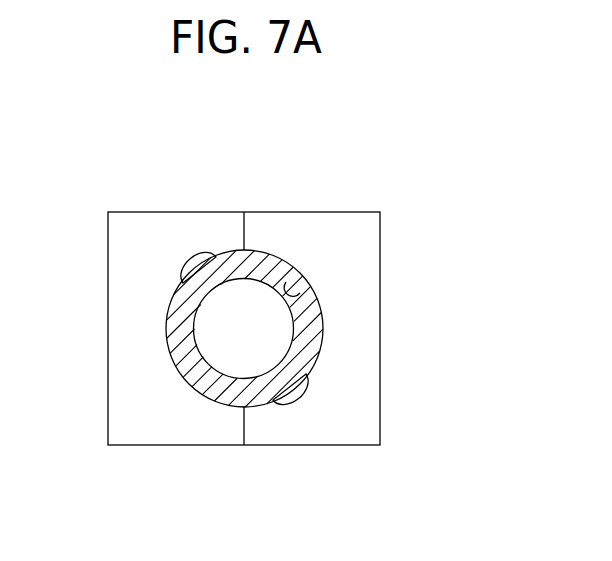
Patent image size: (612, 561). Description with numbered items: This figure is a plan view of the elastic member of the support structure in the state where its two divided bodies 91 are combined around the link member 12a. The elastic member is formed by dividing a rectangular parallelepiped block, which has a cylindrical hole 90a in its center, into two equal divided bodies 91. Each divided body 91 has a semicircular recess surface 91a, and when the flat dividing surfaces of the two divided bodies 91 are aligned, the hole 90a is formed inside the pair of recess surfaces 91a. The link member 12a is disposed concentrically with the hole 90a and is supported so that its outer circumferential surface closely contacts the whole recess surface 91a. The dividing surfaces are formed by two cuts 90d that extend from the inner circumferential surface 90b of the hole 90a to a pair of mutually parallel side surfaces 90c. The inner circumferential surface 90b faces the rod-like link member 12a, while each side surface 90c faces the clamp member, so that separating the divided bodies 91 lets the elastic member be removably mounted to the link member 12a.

The divided body 91 is at (132, 212).
The recess surface 91a is at (216, 256).
The hole 90a is at (227, 338).
The inner circumferential surface 90b is at (303, 303).
The side surface 90c is at (314, 212).
The cut 90d is at (245, 233).
The link member 12a is at (322, 353).